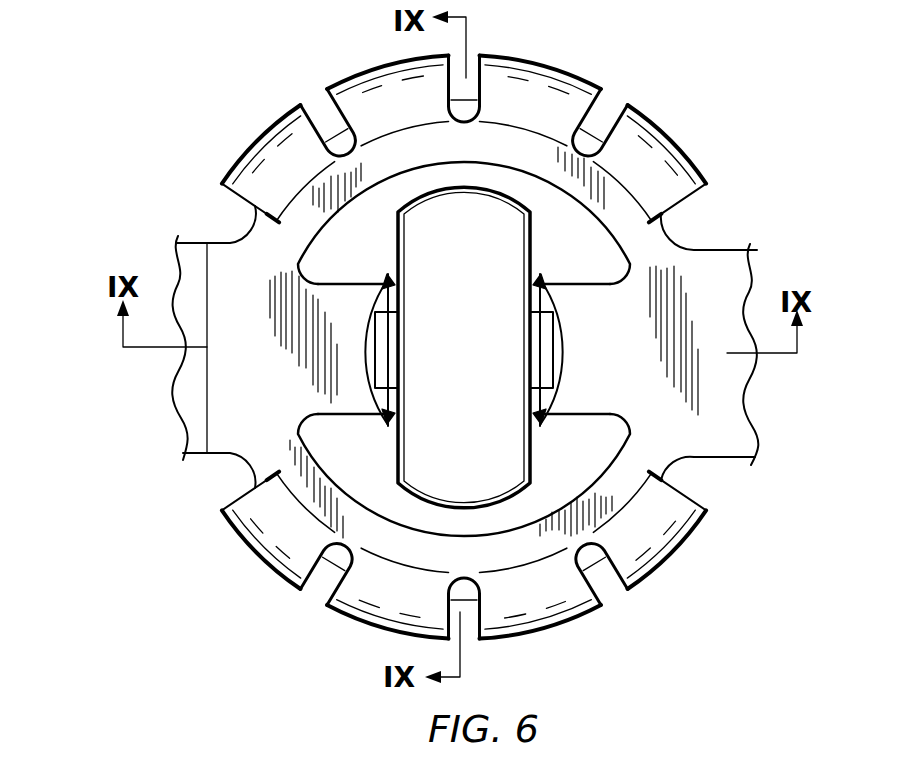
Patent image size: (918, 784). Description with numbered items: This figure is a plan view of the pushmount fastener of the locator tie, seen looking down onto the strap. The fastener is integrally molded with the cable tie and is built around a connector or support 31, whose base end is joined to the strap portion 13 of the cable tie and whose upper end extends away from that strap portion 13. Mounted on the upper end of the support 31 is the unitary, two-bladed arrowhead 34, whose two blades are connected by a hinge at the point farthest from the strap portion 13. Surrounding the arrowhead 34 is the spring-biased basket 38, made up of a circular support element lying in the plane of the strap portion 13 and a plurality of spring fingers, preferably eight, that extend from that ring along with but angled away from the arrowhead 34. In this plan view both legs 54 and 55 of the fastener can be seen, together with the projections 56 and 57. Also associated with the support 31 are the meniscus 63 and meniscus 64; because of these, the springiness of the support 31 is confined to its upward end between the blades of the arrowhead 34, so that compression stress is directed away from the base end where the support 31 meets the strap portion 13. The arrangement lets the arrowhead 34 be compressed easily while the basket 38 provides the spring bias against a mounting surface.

The strap portion 13 is at (726, 401).
The support 31 is at (540, 298).
The arrowhead 34 is at (503, 247).
The spring-biased basket 38 is at (622, 483).
The leg 54 is at (633, 353).
The leg 55 is at (372, 370).
The projection 56 is at (553, 345).
The projection 57 is at (333, 340).
The meniscus 63 is at (558, 377).
The meniscus 64 is at (377, 317).